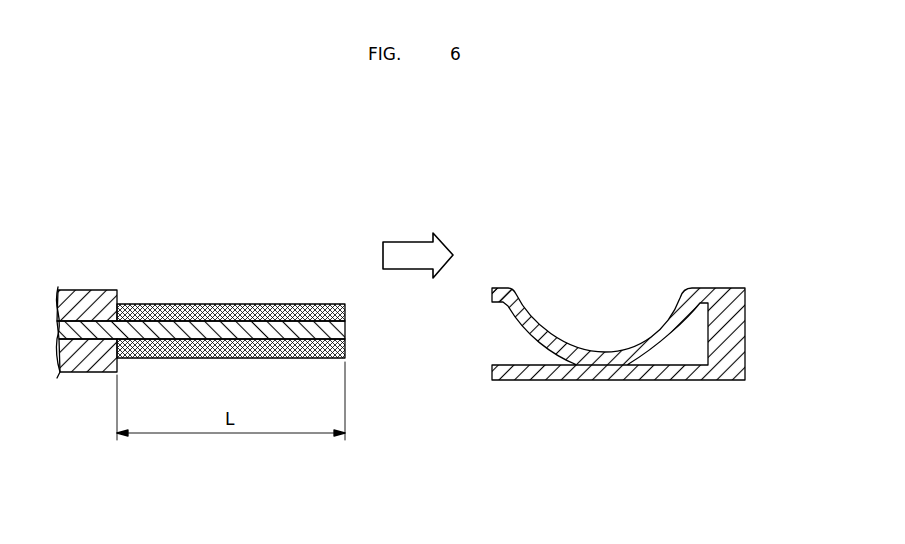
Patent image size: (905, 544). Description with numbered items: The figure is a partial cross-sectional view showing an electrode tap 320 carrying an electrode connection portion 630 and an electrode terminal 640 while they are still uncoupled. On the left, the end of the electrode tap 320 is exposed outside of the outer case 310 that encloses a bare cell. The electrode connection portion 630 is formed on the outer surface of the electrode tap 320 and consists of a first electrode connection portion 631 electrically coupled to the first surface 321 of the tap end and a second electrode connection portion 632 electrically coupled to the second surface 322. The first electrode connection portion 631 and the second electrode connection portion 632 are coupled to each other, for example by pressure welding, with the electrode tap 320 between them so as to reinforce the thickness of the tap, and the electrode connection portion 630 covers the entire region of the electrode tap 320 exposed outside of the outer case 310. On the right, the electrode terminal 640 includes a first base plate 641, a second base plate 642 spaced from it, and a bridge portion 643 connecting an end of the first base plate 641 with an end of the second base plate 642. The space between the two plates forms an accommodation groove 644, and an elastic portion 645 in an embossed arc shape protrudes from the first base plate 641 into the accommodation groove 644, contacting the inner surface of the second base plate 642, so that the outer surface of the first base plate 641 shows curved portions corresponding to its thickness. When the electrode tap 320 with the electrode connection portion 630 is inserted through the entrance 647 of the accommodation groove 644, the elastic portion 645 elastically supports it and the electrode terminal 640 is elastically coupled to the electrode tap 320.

The outer case 310 is at (94, 294).
The electrode tap 320 is at (87, 346).
The first surface 321 is at (328, 316).
The second surface 322 is at (346, 338).
The electrode connection portion 630 is at (156, 285).
The first electrode connection portion 631 is at (218, 305).
The second electrode connection portion 632 is at (346, 356).
The electrode terminal 640 is at (723, 268).
The first base plate 641 is at (495, 288).
The second base plate 642 is at (509, 372).
The bridge portion 643 is at (736, 374).
The accommodation groove 644 is at (691, 347).
The elastic portion 645 is at (599, 340).
The entrance 647 is at (487, 335).